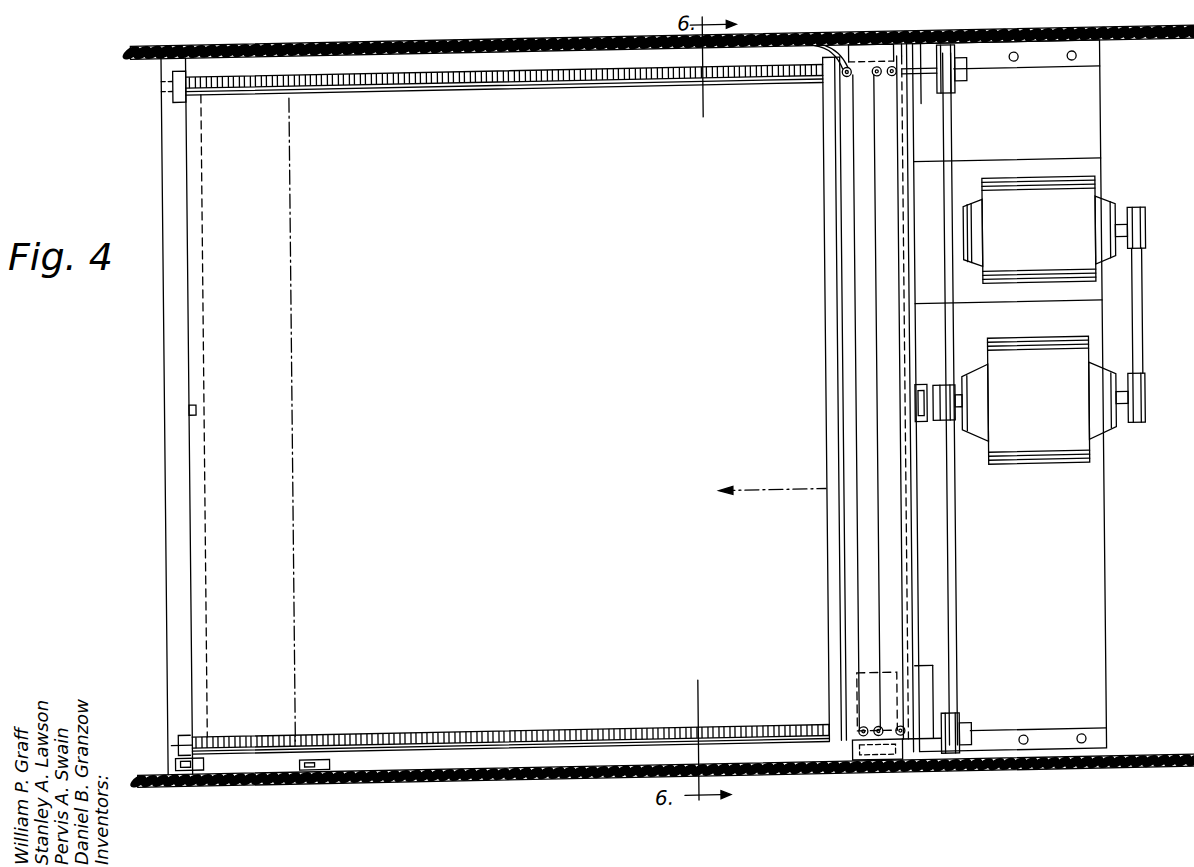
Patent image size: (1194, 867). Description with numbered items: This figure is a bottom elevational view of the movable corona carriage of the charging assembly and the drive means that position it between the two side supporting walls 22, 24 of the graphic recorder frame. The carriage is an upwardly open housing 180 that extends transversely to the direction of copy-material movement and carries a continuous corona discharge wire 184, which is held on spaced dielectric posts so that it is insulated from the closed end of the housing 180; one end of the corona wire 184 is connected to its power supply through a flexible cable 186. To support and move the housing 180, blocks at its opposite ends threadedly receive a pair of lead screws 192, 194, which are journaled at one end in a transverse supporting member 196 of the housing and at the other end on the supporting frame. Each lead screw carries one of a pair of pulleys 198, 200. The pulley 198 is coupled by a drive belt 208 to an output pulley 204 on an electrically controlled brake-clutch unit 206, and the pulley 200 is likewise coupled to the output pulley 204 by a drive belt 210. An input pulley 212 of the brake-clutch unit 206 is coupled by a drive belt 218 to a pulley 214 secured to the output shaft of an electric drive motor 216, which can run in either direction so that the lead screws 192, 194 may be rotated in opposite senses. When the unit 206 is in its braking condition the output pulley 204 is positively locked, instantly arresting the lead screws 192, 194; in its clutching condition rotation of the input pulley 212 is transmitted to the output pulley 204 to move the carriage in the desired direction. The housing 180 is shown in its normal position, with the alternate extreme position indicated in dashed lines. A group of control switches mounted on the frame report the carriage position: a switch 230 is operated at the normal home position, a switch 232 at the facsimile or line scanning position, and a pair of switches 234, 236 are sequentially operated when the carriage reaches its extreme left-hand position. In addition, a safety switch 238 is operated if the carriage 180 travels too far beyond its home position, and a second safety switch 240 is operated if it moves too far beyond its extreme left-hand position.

The side supporting wall 22 is at (466, 37).
The side supporting wall 24 is at (665, 794).
The corona carriage housing 180 is at (301, 199).
The corona discharge wire 184 is at (902, 211).
The flexible cable 186 is at (836, 50).
The lead screw 192 is at (484, 89).
The lead screw 194 is at (469, 727).
The transverse supporting member 196 is at (165, 138).
The pulley 198 is at (959, 48).
The pulley 200 is at (957, 762).
The output pulley 204 is at (955, 430).
The brake-clutch unit 206 is at (1041, 399).
The drive belt 208 is at (968, 142).
The drive belt 210 is at (962, 638).
The input pulley 212 is at (1142, 436).
The motor pulley 214 is at (1143, 216).
The electric drive motor 216 is at (1045, 229).
The drive belt 218 is at (1144, 323).
The switch 230 is at (883, 775).
The switch 232 is at (321, 765).
The switch 234 is at (174, 736).
The switch 236 is at (186, 764).
The safety switch 238 is at (925, 411).
The safety switch 240 is at (190, 402).